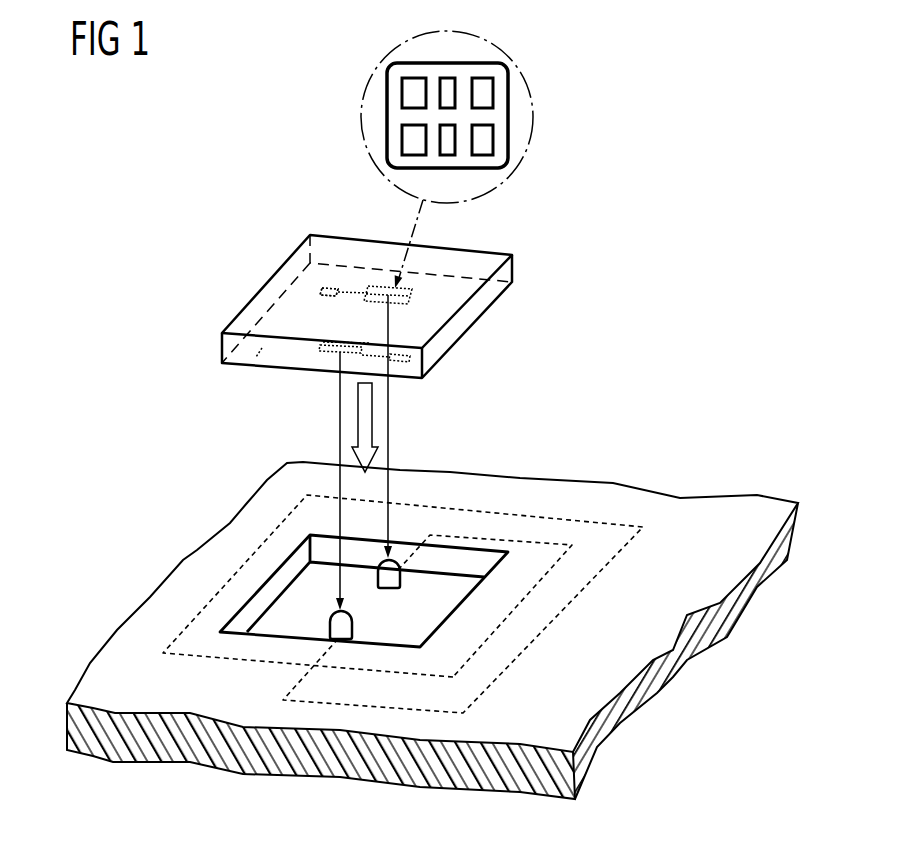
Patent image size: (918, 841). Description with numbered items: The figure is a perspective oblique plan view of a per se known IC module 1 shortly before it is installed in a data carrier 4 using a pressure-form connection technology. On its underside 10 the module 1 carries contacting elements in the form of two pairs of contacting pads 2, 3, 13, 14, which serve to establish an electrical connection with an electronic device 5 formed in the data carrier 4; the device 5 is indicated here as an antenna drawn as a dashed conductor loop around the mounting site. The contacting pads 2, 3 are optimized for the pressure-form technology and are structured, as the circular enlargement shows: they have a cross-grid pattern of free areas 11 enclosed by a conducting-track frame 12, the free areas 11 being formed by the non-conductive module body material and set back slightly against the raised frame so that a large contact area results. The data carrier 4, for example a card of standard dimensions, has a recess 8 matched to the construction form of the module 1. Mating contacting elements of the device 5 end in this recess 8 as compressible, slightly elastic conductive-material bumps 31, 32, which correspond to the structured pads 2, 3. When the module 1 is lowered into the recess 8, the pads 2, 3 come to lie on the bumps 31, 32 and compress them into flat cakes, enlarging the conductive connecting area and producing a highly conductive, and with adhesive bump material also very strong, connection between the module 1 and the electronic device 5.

The IC module 1 is at (228, 300).
The contacting pad 2 is at (415, 292).
The contacting pad 3 is at (327, 350).
The data carrier 4 is at (717, 508).
The electronic device 5 is at (615, 558).
The recess 8 is at (265, 580).
The underside 10 is at (262, 353).
The free area 11 is at (487, 92).
The conducting-track frame 12 is at (497, 145).
The contacting pad 13 is at (327, 290).
The contacting pad 14 is at (398, 360).
The conductive-material bump 31 is at (395, 577).
The conductive-material bump 32 is at (347, 627).